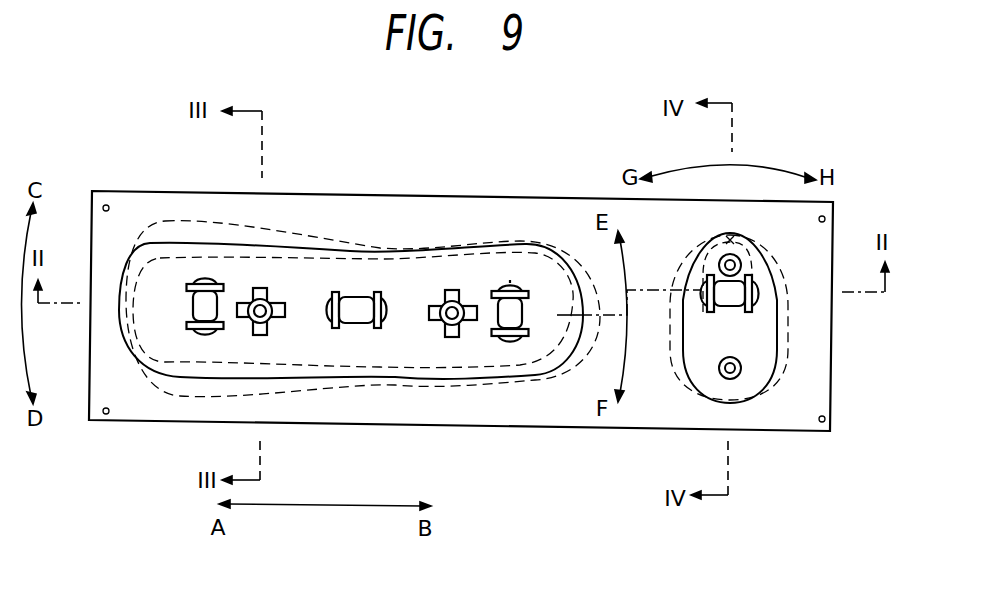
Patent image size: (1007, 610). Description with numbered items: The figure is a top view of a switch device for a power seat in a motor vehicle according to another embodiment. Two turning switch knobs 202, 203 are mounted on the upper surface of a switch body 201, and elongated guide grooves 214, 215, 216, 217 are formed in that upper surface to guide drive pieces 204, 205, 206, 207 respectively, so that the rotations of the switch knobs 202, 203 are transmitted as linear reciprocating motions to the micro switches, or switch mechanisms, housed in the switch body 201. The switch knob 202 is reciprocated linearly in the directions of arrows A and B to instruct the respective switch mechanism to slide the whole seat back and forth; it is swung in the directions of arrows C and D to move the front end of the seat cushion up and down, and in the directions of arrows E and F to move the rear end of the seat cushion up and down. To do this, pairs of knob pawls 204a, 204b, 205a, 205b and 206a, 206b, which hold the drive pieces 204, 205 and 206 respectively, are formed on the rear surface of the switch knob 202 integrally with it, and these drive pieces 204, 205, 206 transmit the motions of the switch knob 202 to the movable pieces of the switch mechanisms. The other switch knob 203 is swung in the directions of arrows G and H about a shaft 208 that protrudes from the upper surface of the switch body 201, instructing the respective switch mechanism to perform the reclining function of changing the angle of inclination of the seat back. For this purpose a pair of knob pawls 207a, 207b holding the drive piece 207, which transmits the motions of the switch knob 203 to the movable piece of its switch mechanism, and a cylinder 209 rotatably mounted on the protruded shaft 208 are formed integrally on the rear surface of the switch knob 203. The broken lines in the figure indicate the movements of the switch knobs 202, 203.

The switch body 201 is at (308, 197).
The switch knob 202 is at (393, 268).
The switch knob 203 is at (707, 388).
The drive piece 204 is at (159, 308).
The knob pawl 204a is at (217, 282).
The knob pawl 204b is at (205, 332).
The drive piece 205 is at (381, 348).
The knob pawl 205a is at (343, 330).
The knob pawl 205b is at (372, 330).
The drive piece 206 is at (512, 320).
The knob pawl 206a is at (496, 292).
The knob pawl 206b is at (500, 337).
The drive piece 207 is at (767, 318).
The knob pawl 207a is at (712, 308).
The knob pawl 207b is at (752, 308).
The shaft 208 is at (733, 380).
The cylinder 209 is at (742, 371).
The guide groove 214 is at (222, 343).
The guide groove 215 is at (388, 305).
The guide groove 216 is at (510, 282).
The guide groove 217 is at (750, 300).